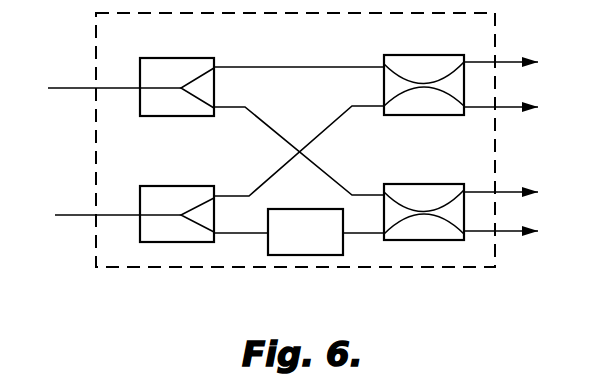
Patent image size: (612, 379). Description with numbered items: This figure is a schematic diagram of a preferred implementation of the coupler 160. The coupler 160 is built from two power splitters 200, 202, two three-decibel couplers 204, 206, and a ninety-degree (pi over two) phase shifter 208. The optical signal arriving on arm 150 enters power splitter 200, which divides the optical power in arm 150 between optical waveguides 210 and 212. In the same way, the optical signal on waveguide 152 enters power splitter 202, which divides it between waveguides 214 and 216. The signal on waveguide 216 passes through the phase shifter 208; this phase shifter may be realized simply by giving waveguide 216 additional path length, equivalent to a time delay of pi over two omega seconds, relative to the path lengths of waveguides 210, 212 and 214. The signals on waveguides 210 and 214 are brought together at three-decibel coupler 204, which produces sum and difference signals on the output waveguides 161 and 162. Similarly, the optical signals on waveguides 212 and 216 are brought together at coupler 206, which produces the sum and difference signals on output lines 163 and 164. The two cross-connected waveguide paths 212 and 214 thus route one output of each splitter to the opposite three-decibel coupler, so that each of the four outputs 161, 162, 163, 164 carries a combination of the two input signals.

The arm 150 is at (67, 88).
The waveguide 152 is at (70, 214).
The coupler 160 is at (150, 283).
The waveguide 161 is at (506, 61).
The waveguide 162 is at (506, 106).
The line 163 is at (506, 231).
The line 164 is at (506, 192).
The power splitter 200 is at (175, 57).
The power splitter 202 is at (168, 185).
The 3 dB coupler 204 is at (420, 55).
The 3 dB coupler 206 is at (428, 183).
The phase shifter 208 is at (300, 209).
The optical waveguide 210 is at (312, 66).
The optical waveguide 212 is at (254, 113).
The waveguide 214 is at (326, 130).
The waveguide 216 is at (247, 235).